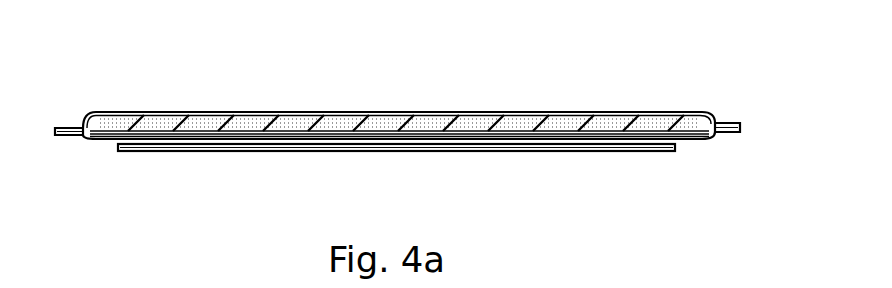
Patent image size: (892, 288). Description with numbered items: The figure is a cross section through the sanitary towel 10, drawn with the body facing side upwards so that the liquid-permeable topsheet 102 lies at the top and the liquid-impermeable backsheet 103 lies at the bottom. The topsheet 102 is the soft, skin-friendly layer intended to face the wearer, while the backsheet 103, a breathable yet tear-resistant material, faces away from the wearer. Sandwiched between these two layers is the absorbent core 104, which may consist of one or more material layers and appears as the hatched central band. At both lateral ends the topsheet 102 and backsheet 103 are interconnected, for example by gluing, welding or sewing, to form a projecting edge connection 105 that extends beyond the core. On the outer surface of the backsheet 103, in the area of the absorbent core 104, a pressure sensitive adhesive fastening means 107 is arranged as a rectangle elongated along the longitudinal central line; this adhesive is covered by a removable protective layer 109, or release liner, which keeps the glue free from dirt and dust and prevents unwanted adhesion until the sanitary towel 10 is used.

The sanitary towel 10 is at (542, 72).
The liquid-permeable topsheet 102 is at (248, 113).
The liquid-impermeable backsheet 103 is at (682, 140).
The absorbent core 104 is at (435, 120).
The projecting edge connection 105 is at (68, 127).
The adhesive fastening means 107 is at (155, 143).
The removable protective layer 109 is at (443, 147).